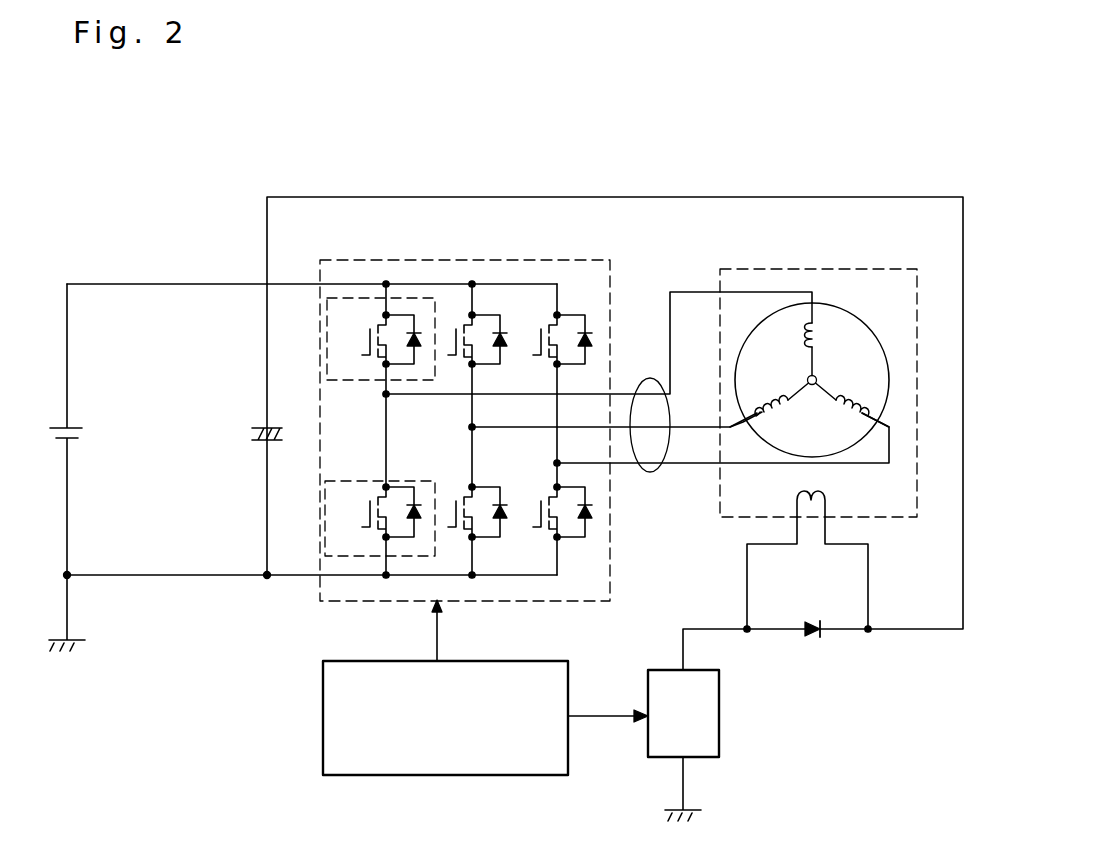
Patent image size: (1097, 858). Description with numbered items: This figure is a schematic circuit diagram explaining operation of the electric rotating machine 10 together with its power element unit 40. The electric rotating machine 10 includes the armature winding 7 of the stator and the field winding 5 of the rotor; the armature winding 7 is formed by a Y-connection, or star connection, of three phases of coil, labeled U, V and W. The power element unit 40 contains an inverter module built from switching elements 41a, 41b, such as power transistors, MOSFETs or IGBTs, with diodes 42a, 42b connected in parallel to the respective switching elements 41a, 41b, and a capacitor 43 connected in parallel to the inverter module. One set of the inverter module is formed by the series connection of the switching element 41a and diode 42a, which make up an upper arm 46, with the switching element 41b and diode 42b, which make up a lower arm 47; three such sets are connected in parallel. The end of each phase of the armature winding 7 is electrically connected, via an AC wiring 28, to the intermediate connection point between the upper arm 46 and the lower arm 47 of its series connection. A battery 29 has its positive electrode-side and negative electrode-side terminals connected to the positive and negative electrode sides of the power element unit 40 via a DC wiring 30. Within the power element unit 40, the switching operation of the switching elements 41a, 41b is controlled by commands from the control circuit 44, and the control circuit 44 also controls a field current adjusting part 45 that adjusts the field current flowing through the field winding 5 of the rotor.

The field winding 5 is at (828, 497).
The armature winding 7 is at (865, 318).
The electric rotating machine 10 is at (842, 268).
The AC wiring 28 is at (650, 472).
The battery 29 is at (82, 434).
The DC wiring 30 is at (150, 285).
The power element unit 40 is at (580, 258).
The switching element 41a is at (370, 352).
The switching element 41b is at (371, 502).
The diode 42a is at (418, 346).
The diode 42b is at (415, 508).
The capacitor 43 is at (272, 441).
The control circuit 44 is at (323, 725).
The field current adjusting part 45 is at (719, 706).
The upper arm 46 is at (327, 330).
The lower arm 47 is at (323, 536).